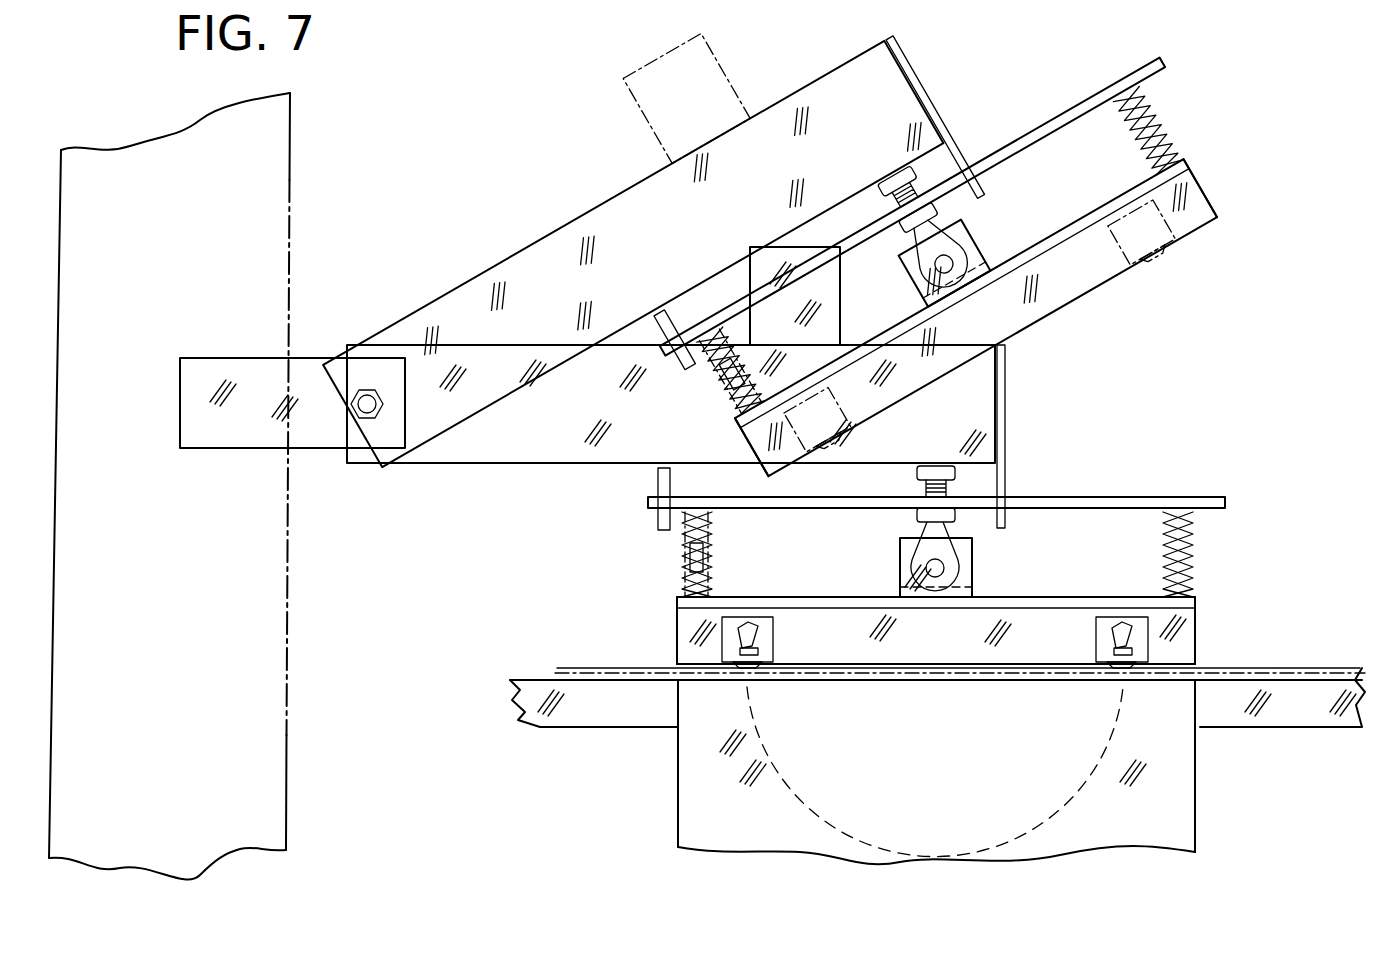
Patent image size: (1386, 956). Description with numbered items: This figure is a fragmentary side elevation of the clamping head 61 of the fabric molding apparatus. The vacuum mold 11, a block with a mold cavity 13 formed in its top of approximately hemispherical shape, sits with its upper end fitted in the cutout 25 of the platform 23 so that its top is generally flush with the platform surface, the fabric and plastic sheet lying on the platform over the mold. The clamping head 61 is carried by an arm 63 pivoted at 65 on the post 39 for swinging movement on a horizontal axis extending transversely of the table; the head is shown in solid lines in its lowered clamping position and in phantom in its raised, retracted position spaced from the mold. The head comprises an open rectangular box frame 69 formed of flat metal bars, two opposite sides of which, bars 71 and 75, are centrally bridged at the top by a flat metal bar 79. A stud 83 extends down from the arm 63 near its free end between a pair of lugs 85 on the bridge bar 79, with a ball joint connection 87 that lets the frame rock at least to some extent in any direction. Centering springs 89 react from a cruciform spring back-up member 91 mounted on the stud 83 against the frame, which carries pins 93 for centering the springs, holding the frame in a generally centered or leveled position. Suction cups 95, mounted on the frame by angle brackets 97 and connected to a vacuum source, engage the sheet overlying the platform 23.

The vacuum mold 11 is at (1200, 810).
The mold cavity 13 is at (1070, 825).
The platform 23 is at (520, 678).
The cutout 25 is at (558, 718).
The post 39 is at (286, 684).
The clamping head 61 is at (802, 375).
The arm 63 is at (558, 222).
The pivot 65 is at (367, 420).
The box frame 69 is at (991, 460).
The flat metal bar 71 is at (1197, 645).
The flat metal bar 75 is at (677, 622).
The bridge bar 79 is at (838, 601).
The stud 83 is at (957, 489).
The lugs 85 is at (975, 548).
The ball joint connection 87 is at (960, 569).
The centering springs 89 is at (1194, 540).
The spring back-up member 91 is at (1118, 497).
The pins 93 is at (1195, 565).
The suction cups 95 is at (726, 668).
The angle bracket 97 is at (773, 640).